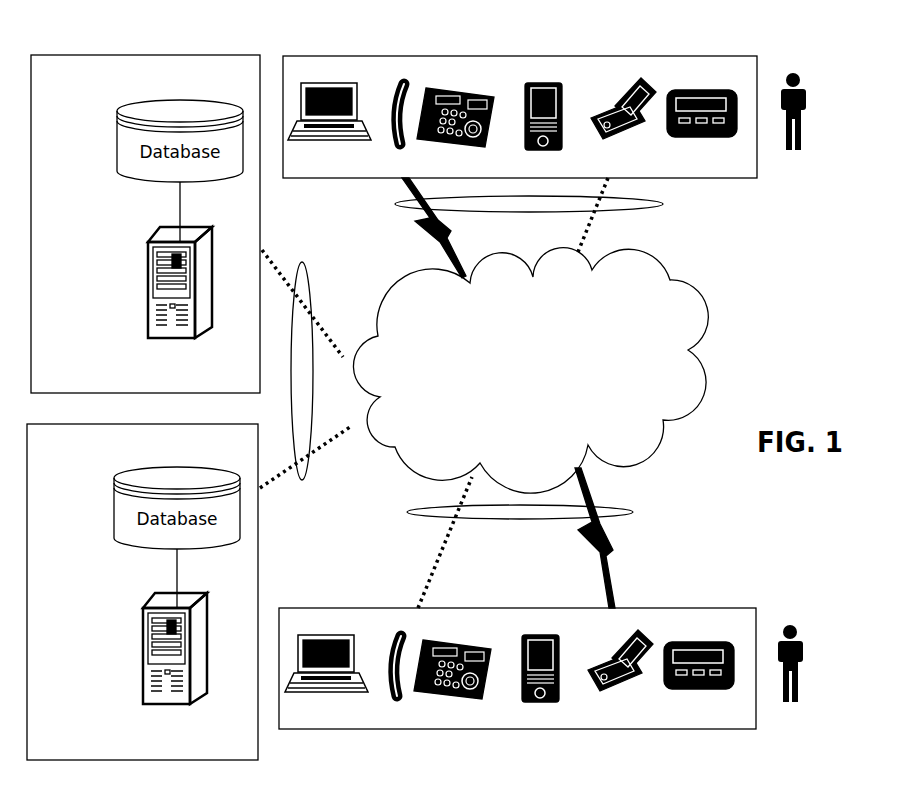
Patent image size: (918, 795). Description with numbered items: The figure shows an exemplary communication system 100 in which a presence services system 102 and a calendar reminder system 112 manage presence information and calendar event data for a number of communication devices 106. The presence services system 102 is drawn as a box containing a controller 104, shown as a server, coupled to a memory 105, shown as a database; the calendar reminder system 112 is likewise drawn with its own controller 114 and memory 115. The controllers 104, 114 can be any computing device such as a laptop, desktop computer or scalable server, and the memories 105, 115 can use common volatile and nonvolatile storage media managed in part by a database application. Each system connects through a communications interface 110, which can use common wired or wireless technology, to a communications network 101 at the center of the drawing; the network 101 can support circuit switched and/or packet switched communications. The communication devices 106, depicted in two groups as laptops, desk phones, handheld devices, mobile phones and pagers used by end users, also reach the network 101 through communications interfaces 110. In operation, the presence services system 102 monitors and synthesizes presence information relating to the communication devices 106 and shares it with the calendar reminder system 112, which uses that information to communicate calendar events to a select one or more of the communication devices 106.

The communication system 100 is at (782, 406).
The communications network 101 is at (508, 419).
The presence services system 102 is at (81, 383).
The controller 104 is at (147, 288).
The memory 105 is at (117, 130).
The communication devices 106 is at (690, 56).
The communications interface 110 is at (312, 283).
The calendar reminder system 112 is at (79, 750).
The controller 114 is at (143, 655).
The memory 115 is at (114, 497).